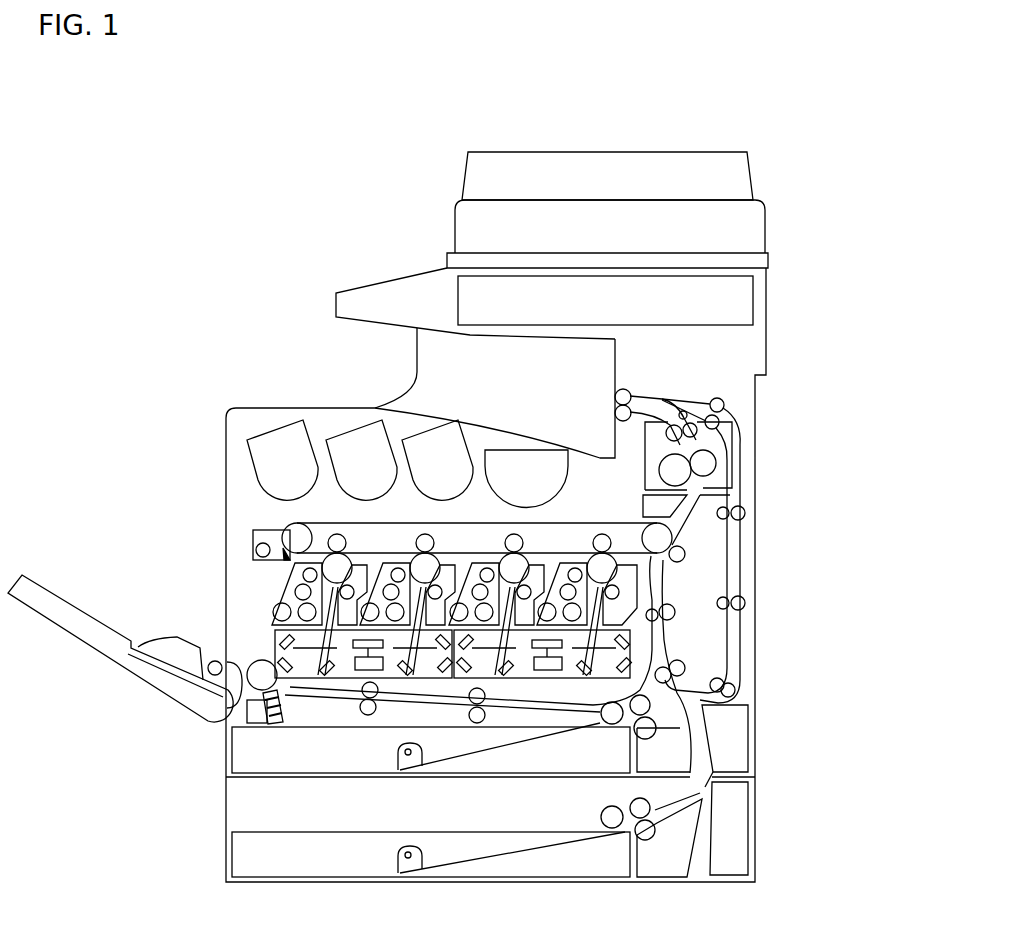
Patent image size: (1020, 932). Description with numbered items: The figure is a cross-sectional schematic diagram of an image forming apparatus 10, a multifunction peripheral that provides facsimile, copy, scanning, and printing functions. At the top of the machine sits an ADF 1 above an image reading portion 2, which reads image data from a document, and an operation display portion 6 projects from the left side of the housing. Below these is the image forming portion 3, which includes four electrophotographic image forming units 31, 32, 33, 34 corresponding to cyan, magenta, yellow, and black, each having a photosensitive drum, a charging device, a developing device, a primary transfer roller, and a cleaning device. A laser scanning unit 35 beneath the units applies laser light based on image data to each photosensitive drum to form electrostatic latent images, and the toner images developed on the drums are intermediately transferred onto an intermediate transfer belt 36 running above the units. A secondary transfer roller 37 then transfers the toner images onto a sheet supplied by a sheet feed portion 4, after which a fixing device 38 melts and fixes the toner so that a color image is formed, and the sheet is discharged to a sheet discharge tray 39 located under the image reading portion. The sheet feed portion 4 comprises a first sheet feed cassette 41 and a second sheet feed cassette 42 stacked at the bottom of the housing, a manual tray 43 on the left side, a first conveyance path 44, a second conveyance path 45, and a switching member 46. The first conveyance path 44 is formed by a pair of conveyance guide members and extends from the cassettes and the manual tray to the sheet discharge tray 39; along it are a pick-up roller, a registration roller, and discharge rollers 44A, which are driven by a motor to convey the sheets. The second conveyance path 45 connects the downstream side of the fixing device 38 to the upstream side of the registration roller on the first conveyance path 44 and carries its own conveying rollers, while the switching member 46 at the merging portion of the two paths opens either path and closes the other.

The ADF 1 is at (760, 188).
The image reading portion 2 is at (760, 302).
The image forming portion 3 is at (240, 430).
The sheet feed portion 4 is at (745, 542).
The operation display portion 6 is at (370, 275).
The image forming apparatus 10 is at (220, 196).
The image forming unit 31 is at (346, 548).
The image forming unit 32 is at (434, 548).
The image forming unit 33 is at (523, 548).
The image forming unit 34 is at (612, 558).
The laser scanning unit 35 is at (275, 642).
The intermediate transfer belt 36 is at (590, 521).
The secondary transfer roller 37 is at (683, 547).
The fixing device 38 is at (722, 446).
The sheet discharge tray 39 is at (490, 423).
The first sheet feed cassette 41 is at (228, 752).
The second sheet feed cassette 42 is at (228, 852).
The manual tray 43 is at (75, 606).
The first conveyance path 44 is at (662, 580).
The discharge rollers 44A is at (628, 392).
The second conveyance path 45 is at (735, 587).
The switching member 46 is at (688, 398).